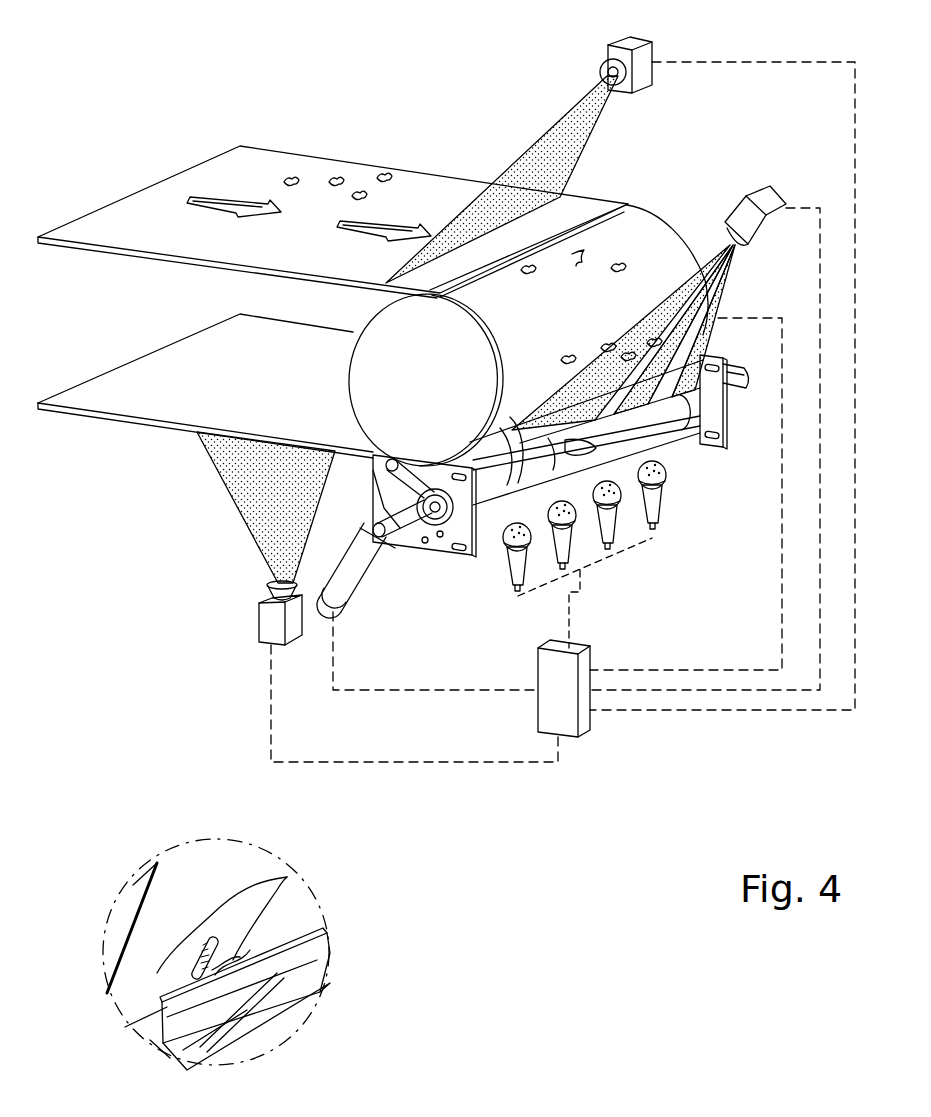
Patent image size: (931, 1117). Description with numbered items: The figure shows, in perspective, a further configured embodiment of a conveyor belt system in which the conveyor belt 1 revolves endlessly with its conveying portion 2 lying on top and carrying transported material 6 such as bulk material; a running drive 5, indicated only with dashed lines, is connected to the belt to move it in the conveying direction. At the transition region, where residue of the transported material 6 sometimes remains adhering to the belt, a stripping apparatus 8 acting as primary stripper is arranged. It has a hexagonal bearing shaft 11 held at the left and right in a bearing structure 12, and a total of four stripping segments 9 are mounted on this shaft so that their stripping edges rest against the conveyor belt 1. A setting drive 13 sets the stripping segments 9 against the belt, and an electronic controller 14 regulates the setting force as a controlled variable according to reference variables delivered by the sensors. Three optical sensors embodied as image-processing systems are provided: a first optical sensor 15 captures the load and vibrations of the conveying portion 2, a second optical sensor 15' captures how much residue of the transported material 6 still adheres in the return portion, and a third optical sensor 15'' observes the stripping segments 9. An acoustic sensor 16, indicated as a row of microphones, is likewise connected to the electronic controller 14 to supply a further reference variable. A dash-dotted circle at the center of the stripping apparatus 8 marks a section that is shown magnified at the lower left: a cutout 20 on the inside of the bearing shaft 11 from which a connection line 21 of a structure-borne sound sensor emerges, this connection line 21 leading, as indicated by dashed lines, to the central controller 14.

The conveyor belt 1 is at (168, 158).
The conveying portion 2 is at (200, 178).
The running drive 5 is at (727, 303).
The transported material 6 is at (310, 190).
The stripping apparatus 8 is at (537, 500).
The stripping segment 9 is at (650, 417).
The bearing shaft 11 is at (738, 372).
The bearing structure 12 is at (440, 548).
The setting drive 13 is at (370, 565).
The electronic controller 14 is at (584, 720).
The first optical sensor 15 is at (620, 360).
The second optical sensor 15' is at (377, 597).
The third optical sensor 15'' is at (666, 408).
The acoustic sensor 16 is at (500, 598).
The cutout 20 is at (205, 935).
The connection line 21 is at (270, 950).